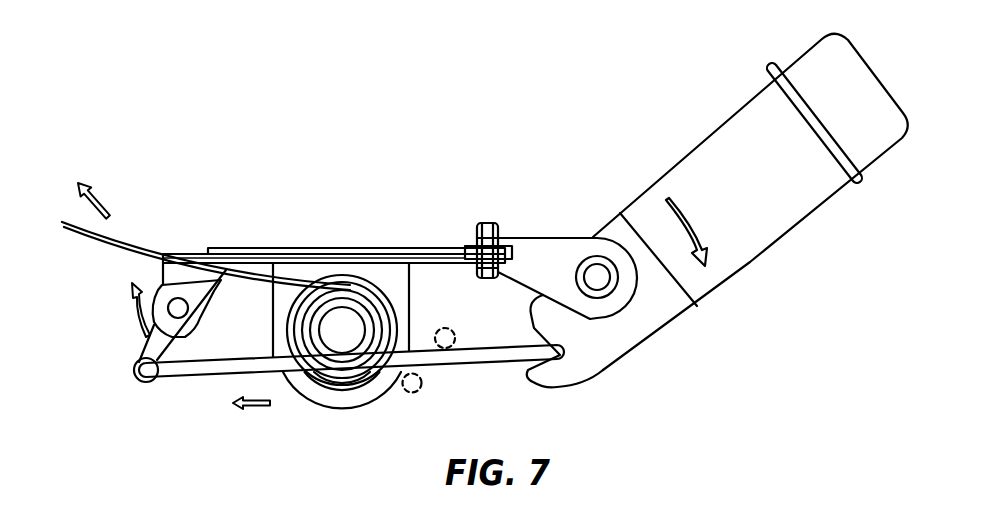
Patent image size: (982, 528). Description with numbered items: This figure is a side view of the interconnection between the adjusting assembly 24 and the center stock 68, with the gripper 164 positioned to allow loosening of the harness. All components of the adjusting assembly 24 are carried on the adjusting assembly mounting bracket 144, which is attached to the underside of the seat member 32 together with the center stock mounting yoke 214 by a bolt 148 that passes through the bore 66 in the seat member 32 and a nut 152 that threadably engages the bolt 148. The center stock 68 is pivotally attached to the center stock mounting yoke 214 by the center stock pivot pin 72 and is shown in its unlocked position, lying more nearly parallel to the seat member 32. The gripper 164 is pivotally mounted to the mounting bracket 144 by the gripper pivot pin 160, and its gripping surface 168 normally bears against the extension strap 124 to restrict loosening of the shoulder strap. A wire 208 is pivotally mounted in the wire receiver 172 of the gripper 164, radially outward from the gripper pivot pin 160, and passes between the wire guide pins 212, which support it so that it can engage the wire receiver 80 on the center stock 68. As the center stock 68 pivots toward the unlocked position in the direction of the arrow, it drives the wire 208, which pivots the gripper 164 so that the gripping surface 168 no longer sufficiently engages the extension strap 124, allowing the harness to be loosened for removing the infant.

The adjusting assembly 24 is at (128, 352).
The seat member 32 is at (315, 248).
The bore 66 is at (460, 246).
The center stock 68 is at (810, 208).
The center stock pivot pin 72 is at (603, 281).
The wire receiver 80 is at (527, 327).
The extension strap 124 is at (105, 249).
The adjusting assembly mounting bracket 144 is at (187, 253).
The bolt 148 is at (507, 225).
The nut 152 is at (472, 262).
The gripper pivot pin 160 is at (189, 306).
The gripper 164 is at (190, 323).
The gripping surface 168 is at (232, 283).
The wire receiver 172 is at (140, 383).
The wire 208 is at (212, 378).
The wire guide pins 212 is at (423, 384).
The center stock mounting yoke 214 is at (577, 242).